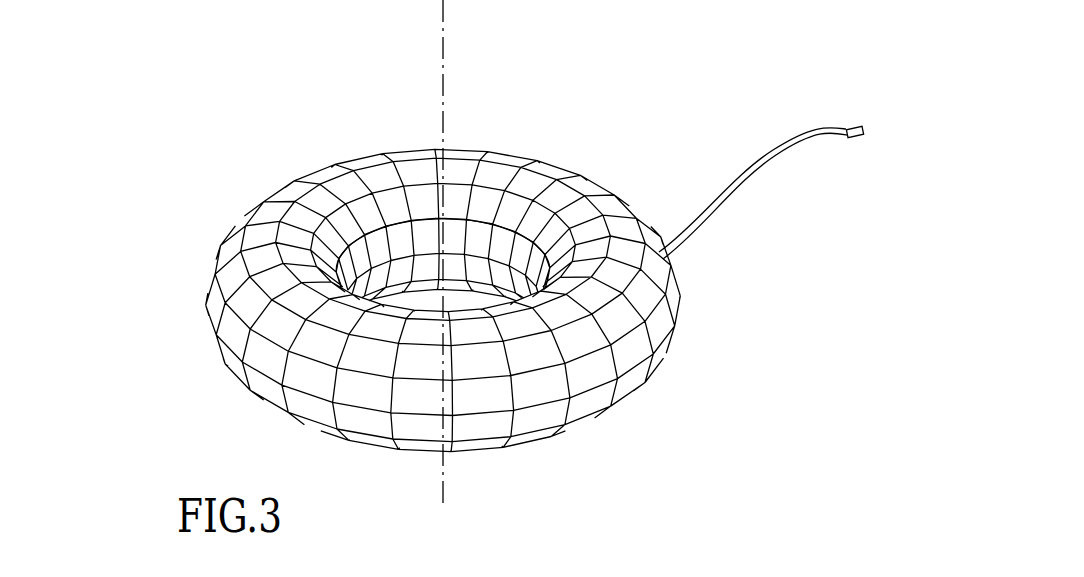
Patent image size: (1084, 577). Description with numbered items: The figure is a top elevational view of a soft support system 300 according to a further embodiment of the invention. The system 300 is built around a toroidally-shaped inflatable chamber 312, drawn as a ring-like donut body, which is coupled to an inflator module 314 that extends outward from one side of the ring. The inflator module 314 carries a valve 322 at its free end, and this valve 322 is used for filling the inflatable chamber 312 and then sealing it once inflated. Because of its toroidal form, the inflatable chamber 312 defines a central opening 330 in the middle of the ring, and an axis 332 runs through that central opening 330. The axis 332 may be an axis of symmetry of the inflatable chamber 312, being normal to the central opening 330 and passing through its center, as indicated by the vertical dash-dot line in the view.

The soft support system 300 is at (160, 129).
The inflatable chamber 312 is at (632, 393).
The inflator module 314 is at (743, 195).
The valve 322 is at (852, 126).
The central opening 330 is at (414, 190).
The axis 332 is at (443, 76).